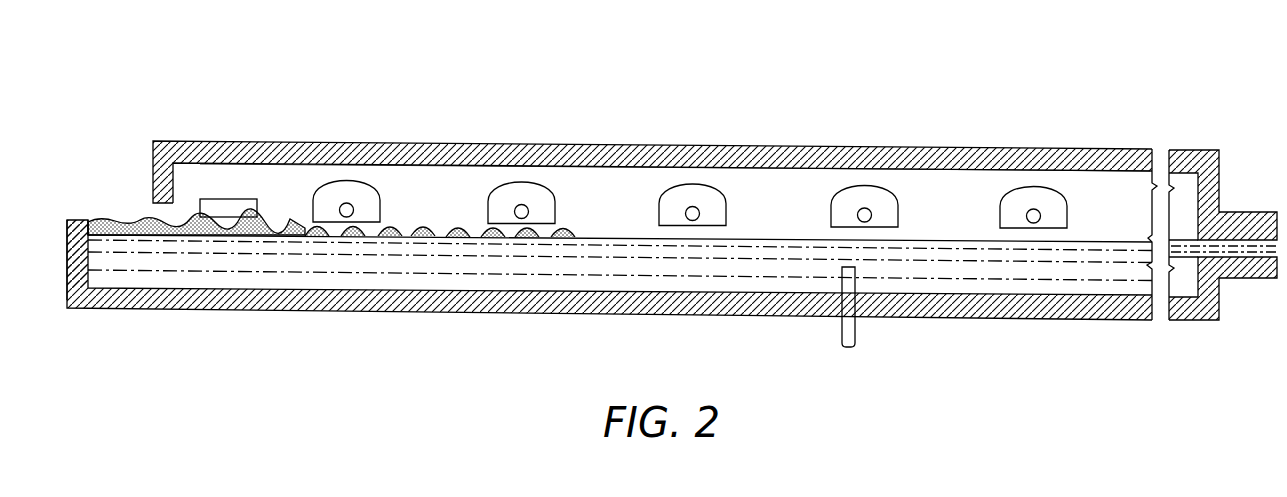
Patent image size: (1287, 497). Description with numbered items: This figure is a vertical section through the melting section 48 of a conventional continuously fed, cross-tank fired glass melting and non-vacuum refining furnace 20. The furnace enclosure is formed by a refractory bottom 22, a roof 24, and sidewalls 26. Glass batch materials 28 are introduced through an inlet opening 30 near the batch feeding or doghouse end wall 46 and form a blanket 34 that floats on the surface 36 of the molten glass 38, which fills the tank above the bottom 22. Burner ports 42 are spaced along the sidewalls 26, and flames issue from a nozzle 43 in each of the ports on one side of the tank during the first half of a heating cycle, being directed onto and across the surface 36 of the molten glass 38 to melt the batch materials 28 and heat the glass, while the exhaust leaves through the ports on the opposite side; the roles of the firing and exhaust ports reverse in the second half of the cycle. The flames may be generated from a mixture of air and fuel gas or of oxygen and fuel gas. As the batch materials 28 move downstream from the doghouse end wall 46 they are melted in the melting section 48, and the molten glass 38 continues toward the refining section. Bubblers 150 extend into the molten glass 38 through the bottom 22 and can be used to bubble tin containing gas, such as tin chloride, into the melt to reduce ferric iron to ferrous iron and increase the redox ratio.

The glass melting and refining furnace 20 is at (1005, 68).
The bottom 22 is at (940, 318).
The roof 24 is at (874, 147).
The sidewalls 26 is at (633, 185).
The glass batch materials 28 is at (183, 222).
The inlet opening 30 is at (112, 205).
The blanket 34 is at (290, 225).
The surface 36 is at (805, 237).
The molten glass 38 is at (693, 267).
The burner ports 42 is at (370, 212).
The nozzle 43 is at (351, 205).
The doghouse end wall 46 is at (67, 265).
The melting section 48 is at (1065, 138).
The bubblers 150 is at (840, 330).